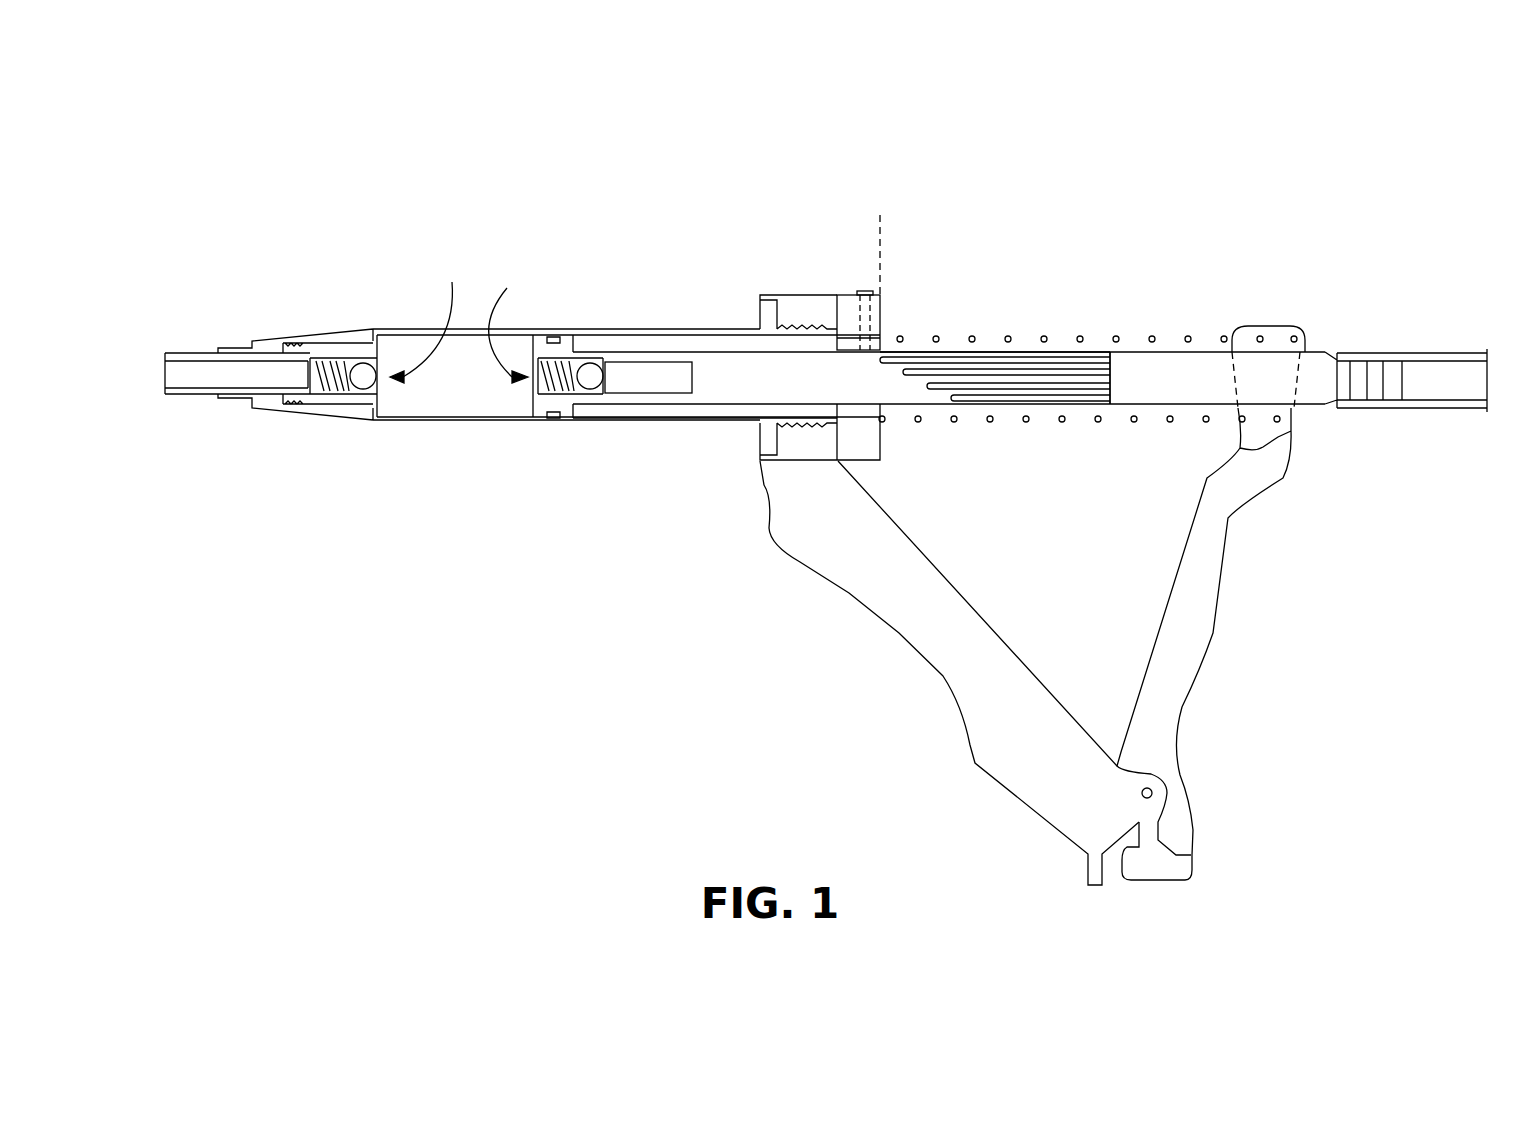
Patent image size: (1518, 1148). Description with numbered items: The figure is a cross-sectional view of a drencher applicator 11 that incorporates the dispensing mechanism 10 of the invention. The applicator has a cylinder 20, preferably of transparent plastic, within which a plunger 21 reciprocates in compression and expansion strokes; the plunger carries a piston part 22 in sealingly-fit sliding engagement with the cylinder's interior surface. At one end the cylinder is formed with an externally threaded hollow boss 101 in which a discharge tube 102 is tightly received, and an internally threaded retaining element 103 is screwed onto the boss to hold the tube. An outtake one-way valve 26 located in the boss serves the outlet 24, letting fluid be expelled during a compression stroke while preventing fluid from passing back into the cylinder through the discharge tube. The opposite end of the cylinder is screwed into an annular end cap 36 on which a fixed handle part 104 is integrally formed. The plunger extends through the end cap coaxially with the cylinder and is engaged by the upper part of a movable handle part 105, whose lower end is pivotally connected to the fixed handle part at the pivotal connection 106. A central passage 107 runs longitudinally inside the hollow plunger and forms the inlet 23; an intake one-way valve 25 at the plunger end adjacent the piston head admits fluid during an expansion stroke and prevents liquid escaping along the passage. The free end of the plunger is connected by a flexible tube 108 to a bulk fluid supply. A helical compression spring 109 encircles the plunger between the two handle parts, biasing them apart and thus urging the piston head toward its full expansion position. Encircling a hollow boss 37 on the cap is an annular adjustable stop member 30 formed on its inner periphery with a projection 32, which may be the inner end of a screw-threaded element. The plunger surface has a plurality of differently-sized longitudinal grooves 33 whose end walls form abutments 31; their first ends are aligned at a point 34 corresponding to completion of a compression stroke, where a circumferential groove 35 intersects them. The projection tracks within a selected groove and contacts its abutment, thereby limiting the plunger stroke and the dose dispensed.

The dispensing mechanism 10 is at (882, 206).
The drencher applicator 11 is at (432, 214).
The cylinder 20 is at (433, 422).
The plunger 21 is at (718, 372).
The piston part 22 is at (538, 408).
The inlet 23 is at (509, 319).
The outlet 24 is at (426, 319).
The intake one-way valve 25 is at (592, 372).
The outtake one-way valve 26 is at (362, 372).
The stop member 30 is at (848, 302).
The abutments 31 is at (882, 360).
The projection 32 is at (822, 385).
The longitudinal grooves 33 is at (1060, 352).
The point 34 is at (815, 178).
The circumferential groove 35 is at (1115, 406).
The end cap 36 is at (788, 302).
The hollow boss 37 is at (848, 412).
The externally threaded hollow boss 101 is at (312, 398).
The discharge tube 102 is at (185, 393).
The retaining element 103 is at (326, 342).
The fixed handle part 104 is at (915, 638).
The movable handle part 105 is at (1200, 625).
The pivotal connection 106 is at (1153, 793).
The central passage 107 is at (643, 387).
The flexible tube 108 is at (1412, 409).
The helical compression spring 109 is at (1008, 336).